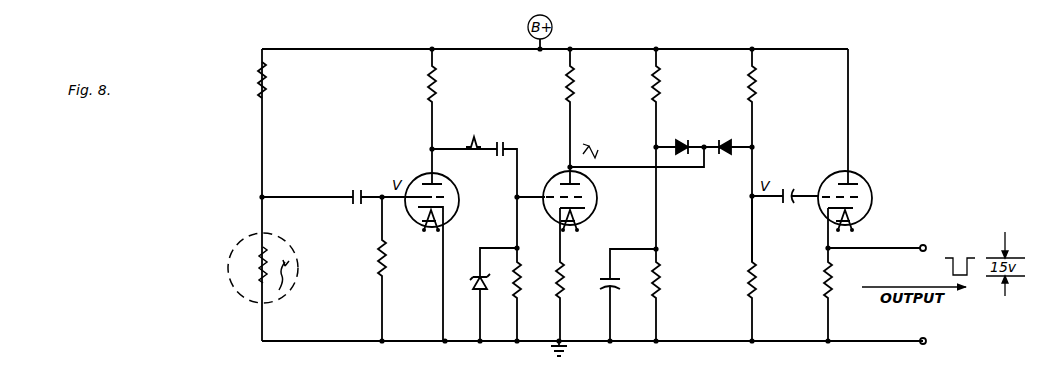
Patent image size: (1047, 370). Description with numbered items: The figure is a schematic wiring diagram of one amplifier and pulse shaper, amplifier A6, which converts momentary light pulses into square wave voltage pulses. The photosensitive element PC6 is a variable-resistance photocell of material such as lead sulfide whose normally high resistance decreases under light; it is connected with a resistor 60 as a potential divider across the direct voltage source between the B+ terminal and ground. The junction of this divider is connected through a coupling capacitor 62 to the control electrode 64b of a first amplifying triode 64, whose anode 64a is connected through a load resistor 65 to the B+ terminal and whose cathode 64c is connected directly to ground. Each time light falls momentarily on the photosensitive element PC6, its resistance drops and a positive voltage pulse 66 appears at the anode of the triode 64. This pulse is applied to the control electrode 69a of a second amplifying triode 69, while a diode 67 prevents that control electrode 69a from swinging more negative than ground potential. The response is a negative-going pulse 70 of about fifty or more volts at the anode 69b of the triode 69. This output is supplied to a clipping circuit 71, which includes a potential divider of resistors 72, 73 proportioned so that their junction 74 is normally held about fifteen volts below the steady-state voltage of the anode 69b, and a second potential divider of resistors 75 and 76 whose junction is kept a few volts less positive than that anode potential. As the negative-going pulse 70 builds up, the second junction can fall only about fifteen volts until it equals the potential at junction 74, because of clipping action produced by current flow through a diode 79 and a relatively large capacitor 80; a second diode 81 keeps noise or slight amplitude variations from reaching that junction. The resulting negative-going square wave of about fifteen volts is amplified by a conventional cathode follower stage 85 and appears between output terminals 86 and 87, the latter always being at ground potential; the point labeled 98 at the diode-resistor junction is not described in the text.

The amplifier A6 is at (476, 32).
The photosensitive element PC6 is at (229, 262).
The resistor 60 is at (266, 77).
The coupling capacitor 62 is at (352, 190).
The first amplifying discharge device 64 is at (423, 176).
The anode 64a is at (442, 182).
The control electrode 64b is at (446, 204).
The cathode 64c is at (414, 221).
The load resistor 65 is at (436, 77).
The positive voltage pulse 66 is at (474, 136).
The diode 67 is at (478, 292).
The second amplifying triode 69 is at (556, 178).
The control electrode 69a is at (588, 204).
The anode 69b is at (584, 186).
The negative-going pulse 70 is at (588, 141).
The clipping circuit 71 is at (716, 201).
The resistor 72 is at (662, 282).
The resistor 73 is at (660, 77).
The junction 74 is at (654, 149).
The resistor 75 is at (757, 287).
The resistor 76 is at (756, 77).
The diode 79 is at (683, 140).
The capacitor 80 is at (602, 284).
The second diode 81 is at (726, 140).
The cathode follower stage 85 is at (852, 183).
The output terminal 86 is at (925, 245).
The output terminal 87 is at (927, 341).
The junction 98 is at (753, 147).